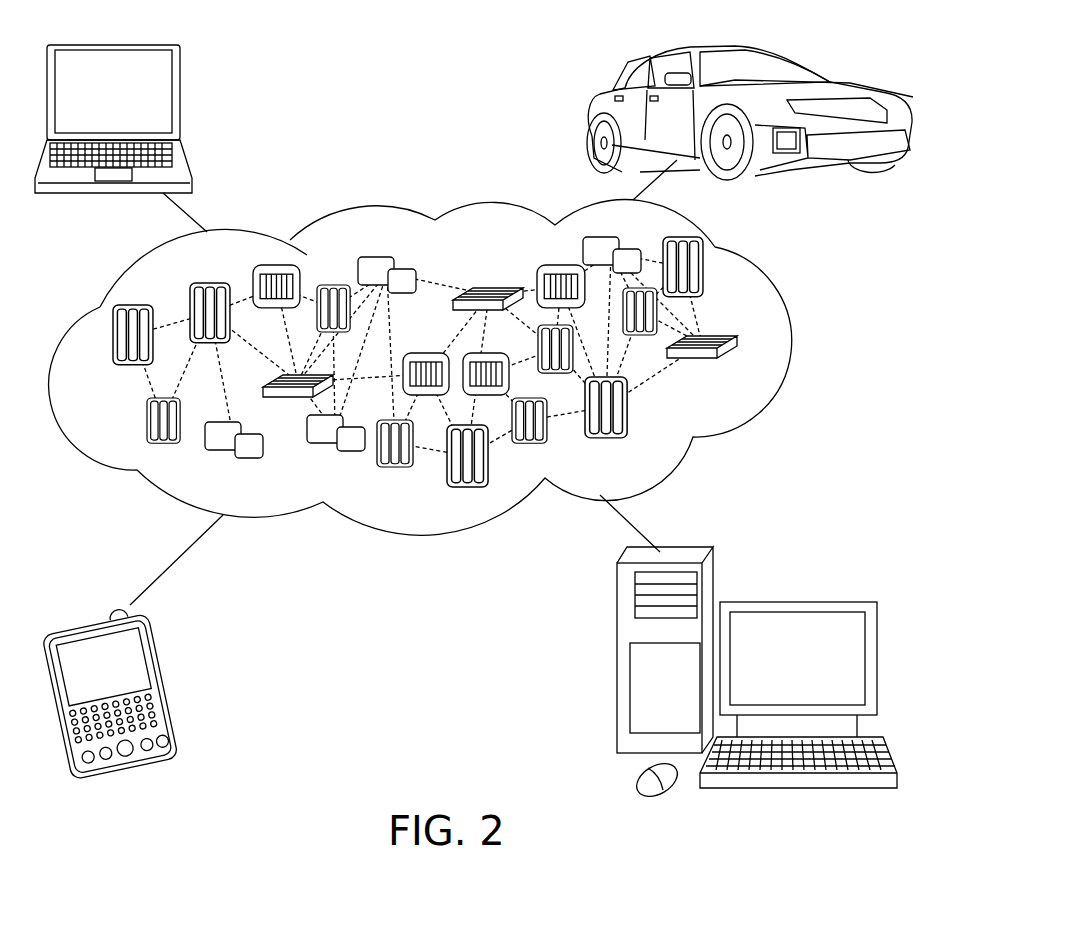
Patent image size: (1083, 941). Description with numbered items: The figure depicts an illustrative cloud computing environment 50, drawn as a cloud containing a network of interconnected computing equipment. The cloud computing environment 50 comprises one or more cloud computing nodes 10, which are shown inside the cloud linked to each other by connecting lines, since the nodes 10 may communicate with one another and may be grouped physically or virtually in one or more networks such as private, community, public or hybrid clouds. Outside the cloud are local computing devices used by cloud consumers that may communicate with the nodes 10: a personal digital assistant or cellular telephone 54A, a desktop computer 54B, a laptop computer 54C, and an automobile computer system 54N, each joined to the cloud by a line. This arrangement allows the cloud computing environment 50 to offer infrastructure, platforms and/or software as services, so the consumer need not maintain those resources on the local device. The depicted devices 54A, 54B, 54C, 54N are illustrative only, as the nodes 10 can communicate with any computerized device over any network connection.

The cloud computing nodes 10 is at (745, 372).
The cloud computing environment 50 is at (797, 342).
The personal digital assistant (PDA) or cellular telephone 54A is at (167, 687).
The desktop computer 54B is at (795, 600).
The laptop computer 54C is at (180, 102).
The automobile computer system 54N is at (590, 115).